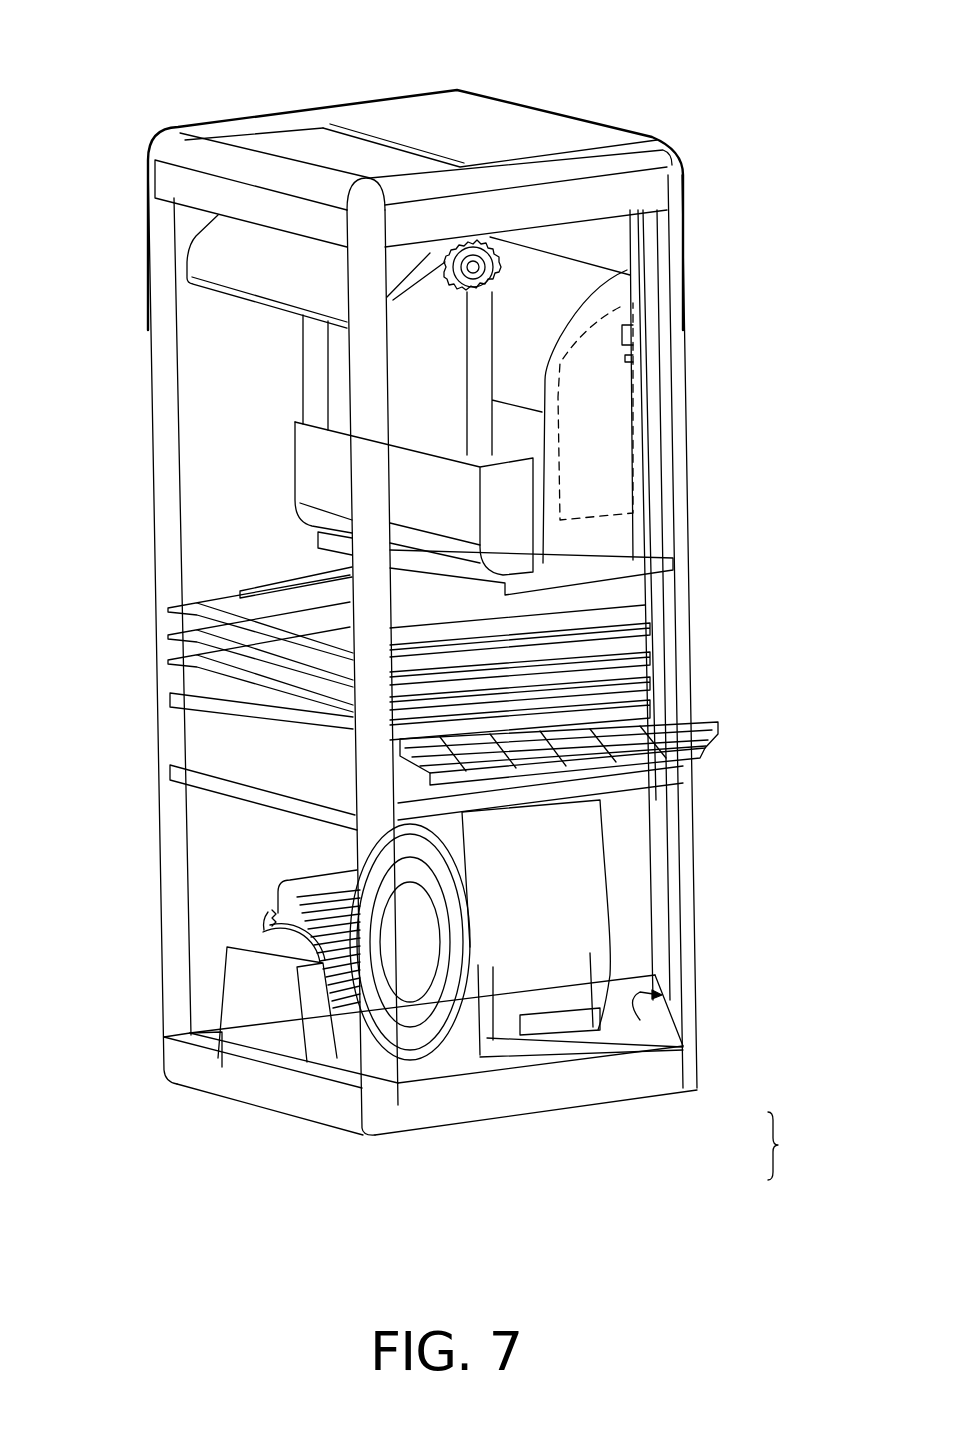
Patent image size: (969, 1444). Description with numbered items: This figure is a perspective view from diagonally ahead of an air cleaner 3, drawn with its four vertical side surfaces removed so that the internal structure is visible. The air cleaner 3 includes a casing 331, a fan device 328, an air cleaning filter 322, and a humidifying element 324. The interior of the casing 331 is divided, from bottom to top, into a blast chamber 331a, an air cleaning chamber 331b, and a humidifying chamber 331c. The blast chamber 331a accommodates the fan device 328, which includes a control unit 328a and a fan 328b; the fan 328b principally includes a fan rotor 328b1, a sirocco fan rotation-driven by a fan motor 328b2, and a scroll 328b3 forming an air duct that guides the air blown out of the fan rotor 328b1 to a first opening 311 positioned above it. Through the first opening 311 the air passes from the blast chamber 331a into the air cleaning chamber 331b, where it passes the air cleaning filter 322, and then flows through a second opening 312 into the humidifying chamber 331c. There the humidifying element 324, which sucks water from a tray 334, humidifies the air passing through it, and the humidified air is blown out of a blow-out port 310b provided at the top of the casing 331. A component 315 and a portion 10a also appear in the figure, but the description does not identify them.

The air cleaner 3 is at (160, 47).
The blow-out port 310b is at (552, 117).
The casing 331 is at (165, 222).
The humidifying chamber 331c is at (203, 343).
The humidifying element 324 is at (322, 374).
The tray 334 is at (290, 478).
The second opening 312 is at (437, 583).
The air cleaning filter 322 is at (657, 645).
The drawer tray 315 is at (717, 724).
The first opening 311 is at (572, 762).
The air cleaning chamber 331b is at (195, 722).
The blast chamber 331a is at (227, 830).
The fan motor 328b2 is at (268, 912).
The scroll 328b3 is at (547, 862).
The fan rotor 328b1 is at (440, 930).
The air outlet 10a is at (600, 1047).
The fan 328b is at (530, 1017).
The control unit 328a is at (470, 1068).
The fan device 328 is at (806, 1146).